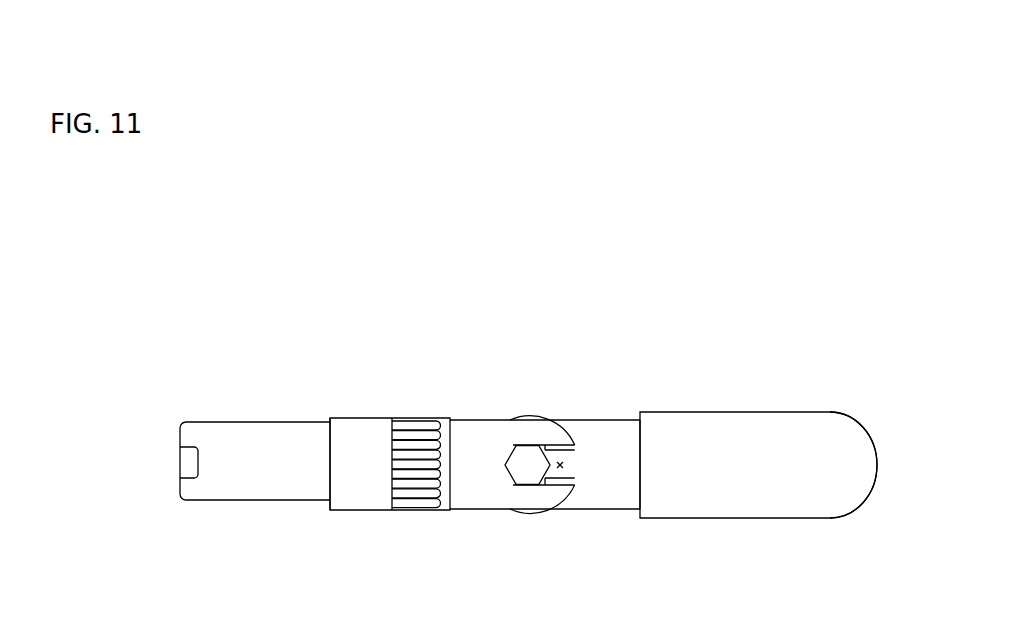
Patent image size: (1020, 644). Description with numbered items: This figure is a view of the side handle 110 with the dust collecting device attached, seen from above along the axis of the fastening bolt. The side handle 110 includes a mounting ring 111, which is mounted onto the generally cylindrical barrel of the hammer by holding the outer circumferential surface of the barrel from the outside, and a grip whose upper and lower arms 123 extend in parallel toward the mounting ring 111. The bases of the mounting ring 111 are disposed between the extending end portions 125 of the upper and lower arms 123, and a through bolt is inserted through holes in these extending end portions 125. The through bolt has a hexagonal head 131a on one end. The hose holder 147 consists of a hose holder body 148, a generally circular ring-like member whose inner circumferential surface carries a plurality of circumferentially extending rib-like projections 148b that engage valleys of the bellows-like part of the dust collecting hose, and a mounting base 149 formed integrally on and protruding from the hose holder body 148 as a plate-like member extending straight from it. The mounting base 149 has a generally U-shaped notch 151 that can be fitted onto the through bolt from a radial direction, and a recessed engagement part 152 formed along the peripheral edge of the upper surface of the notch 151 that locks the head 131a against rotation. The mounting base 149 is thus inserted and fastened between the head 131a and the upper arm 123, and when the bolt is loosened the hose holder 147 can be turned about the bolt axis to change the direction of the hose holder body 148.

The side handle 110 is at (686, 411).
The mounting ring 111 is at (230, 428).
The upper and lower arms 123 is at (773, 422).
The extending end portions 125 is at (592, 468).
The hexagonal head 131a is at (527, 458).
The hose holder 147 is at (341, 412).
The hose holder body 148 is at (347, 498).
The rib-like projections 148b is at (408, 432).
The mounting base 149 is at (484, 482).
The notch 151 is at (556, 446).
The recessed engagement part 152 is at (561, 471).